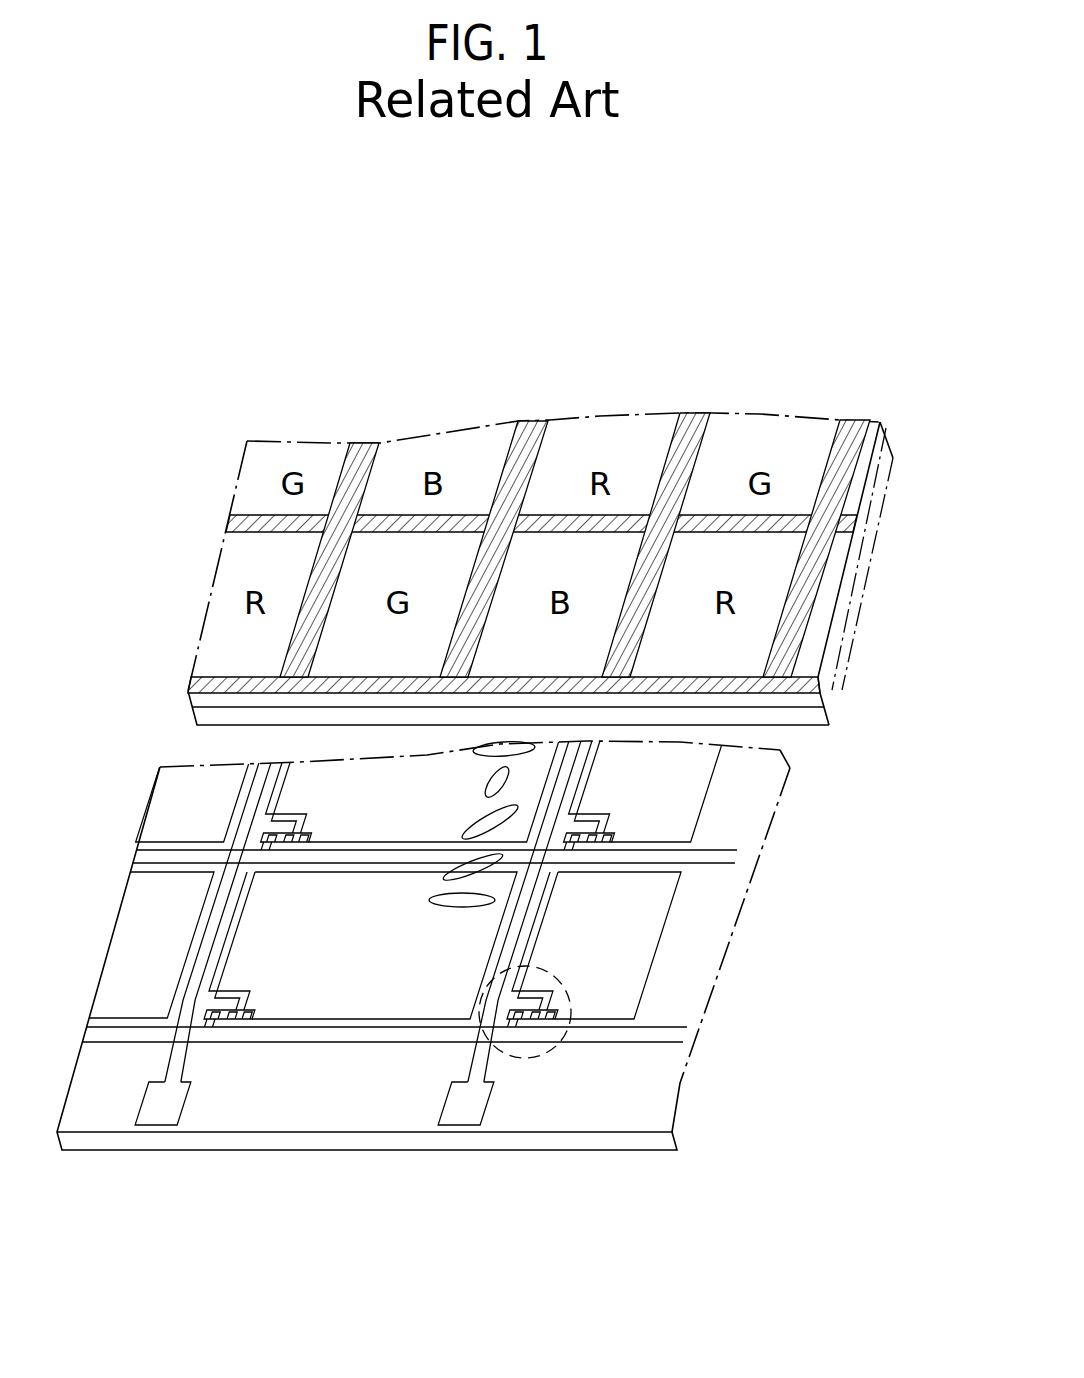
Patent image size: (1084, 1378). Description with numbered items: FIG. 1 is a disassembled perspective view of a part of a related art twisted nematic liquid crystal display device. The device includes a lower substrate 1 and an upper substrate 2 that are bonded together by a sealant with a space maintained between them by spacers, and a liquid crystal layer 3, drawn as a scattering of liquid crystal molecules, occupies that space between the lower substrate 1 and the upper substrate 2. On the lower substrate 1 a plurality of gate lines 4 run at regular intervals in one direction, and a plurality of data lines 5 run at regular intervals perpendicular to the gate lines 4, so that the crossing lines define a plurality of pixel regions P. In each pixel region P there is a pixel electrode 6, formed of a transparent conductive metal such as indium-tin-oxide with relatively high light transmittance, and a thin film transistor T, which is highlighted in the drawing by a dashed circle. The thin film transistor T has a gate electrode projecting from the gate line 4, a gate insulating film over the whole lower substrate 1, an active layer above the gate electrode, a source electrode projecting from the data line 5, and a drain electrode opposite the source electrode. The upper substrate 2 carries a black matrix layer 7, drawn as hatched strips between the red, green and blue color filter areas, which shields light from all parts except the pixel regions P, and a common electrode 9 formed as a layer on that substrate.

The lower substrate 1 is at (630, 1140).
The upper substrate 2 is at (805, 700).
The liquid crystal layer 3 is at (453, 835).
The gate lines 4 is at (645, 1036).
The data lines 5 is at (475, 1063).
The pixel electrode 6 is at (655, 963).
The black matrix layer 7 is at (852, 524).
The common electrode 9 is at (808, 717).
The pixel region P is at (700, 908).
The thin film transistor T is at (528, 1058).